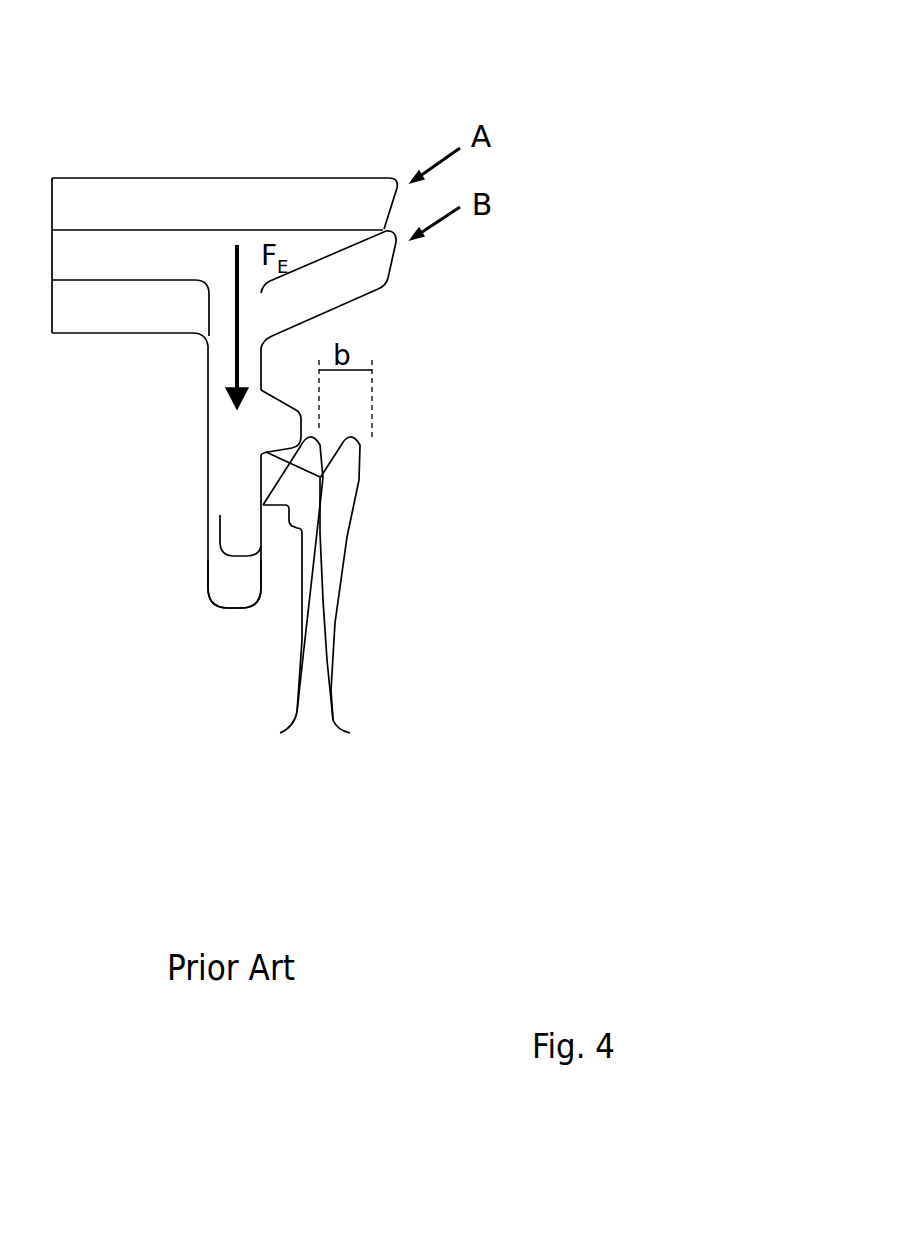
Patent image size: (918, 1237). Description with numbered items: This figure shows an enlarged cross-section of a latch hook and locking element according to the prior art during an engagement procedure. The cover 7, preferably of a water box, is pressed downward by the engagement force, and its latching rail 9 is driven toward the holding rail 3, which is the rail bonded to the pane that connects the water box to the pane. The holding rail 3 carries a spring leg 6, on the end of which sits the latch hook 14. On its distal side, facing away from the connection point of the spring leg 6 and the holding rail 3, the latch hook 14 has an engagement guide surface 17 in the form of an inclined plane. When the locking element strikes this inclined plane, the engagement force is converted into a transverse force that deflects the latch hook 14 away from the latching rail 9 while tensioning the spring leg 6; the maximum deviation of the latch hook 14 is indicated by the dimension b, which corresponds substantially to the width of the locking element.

The holding rail 3 is at (383, 641).
The spring leg 6 is at (317, 667).
The cover 7 is at (257, 348).
The latching rail 9 is at (235, 521).
The latch hook 14 is at (307, 451).
The engagement guide surface 17 is at (300, 489).